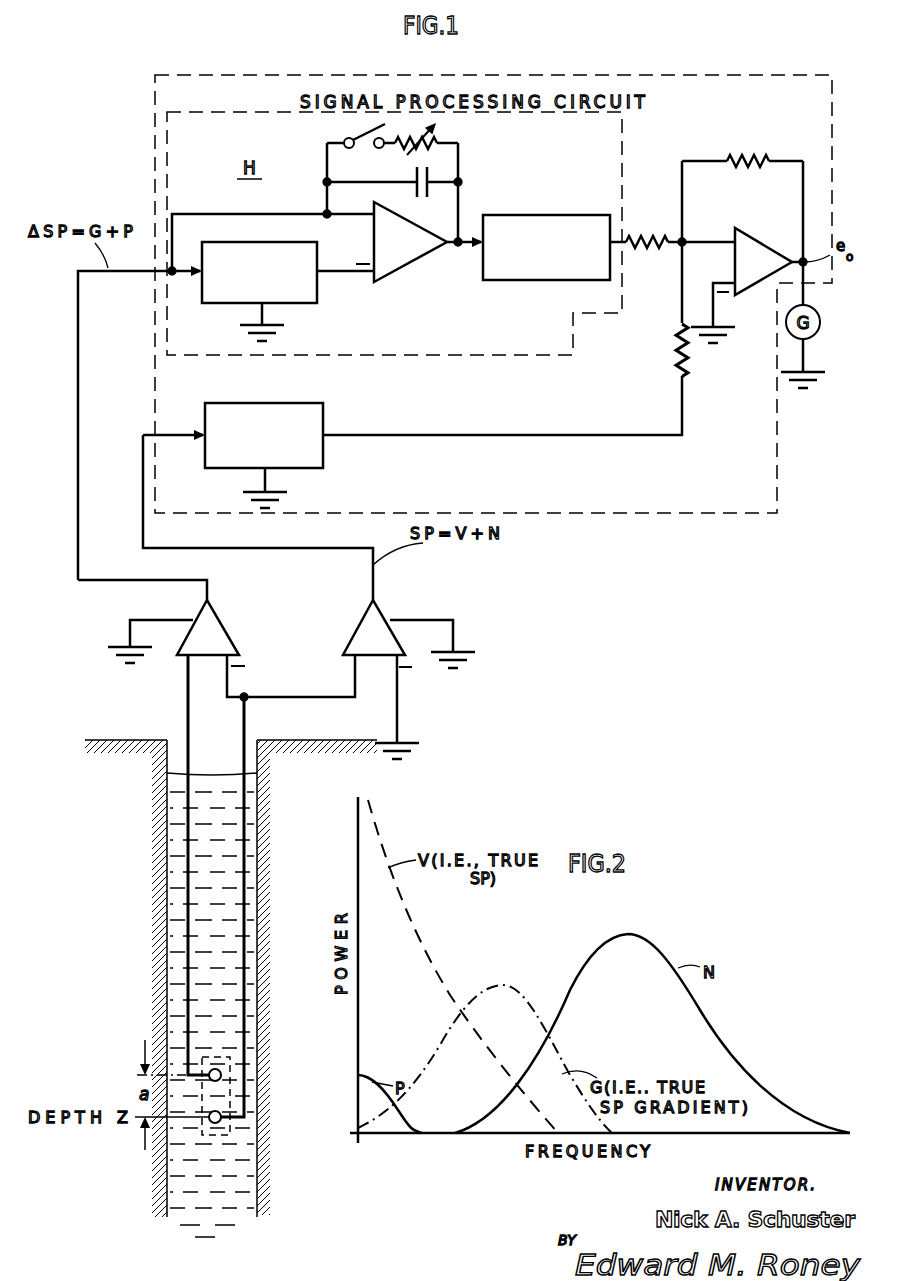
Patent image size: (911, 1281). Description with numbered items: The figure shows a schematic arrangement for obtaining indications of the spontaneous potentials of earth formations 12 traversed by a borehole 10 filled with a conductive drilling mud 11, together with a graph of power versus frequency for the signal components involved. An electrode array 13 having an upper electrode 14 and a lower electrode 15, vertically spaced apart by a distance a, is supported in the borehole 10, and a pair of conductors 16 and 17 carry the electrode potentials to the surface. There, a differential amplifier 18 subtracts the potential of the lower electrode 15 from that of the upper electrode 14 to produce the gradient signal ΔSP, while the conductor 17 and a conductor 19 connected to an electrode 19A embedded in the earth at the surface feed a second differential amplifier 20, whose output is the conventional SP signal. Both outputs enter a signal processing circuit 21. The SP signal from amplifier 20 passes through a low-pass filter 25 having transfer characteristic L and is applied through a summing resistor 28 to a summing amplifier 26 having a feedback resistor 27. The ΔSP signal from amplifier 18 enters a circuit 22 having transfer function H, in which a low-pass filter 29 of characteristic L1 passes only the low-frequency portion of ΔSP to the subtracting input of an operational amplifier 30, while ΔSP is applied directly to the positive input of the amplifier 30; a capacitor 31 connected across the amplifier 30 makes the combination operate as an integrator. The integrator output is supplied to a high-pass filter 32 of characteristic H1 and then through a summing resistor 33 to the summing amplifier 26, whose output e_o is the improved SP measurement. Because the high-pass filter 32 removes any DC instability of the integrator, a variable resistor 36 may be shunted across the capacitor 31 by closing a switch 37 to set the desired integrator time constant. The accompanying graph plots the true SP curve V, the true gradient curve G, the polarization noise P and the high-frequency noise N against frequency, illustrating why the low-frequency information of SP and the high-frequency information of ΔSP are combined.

The borehole 10 is at (252, 842).
The conductive drilling mud 11 is at (226, 817).
The earth formations 12 is at (138, 870).
The electrode array 13 is at (230, 1060).
The upper electrode 14 is at (212, 1068).
The lower electrode 15 is at (215, 1124).
The conductor 16 is at (190, 942).
The conductor 17 is at (242, 865).
The differential amplifier 18 is at (212, 627).
The conductor 19 is at (397, 694).
The surface electrode 19A is at (405, 758).
The differential amplifier 20 is at (365, 621).
The signal processing circuit 21 is at (157, 122).
The circuit having transfer function H 22 is at (623, 162).
The low-pass filter 25 is at (322, 405).
The summing amplifier 26 is at (750, 270).
The feedback resistor 27 is at (768, 153).
The summing resistor 28 is at (673, 345).
The low-pass filter 29 is at (317, 290).
The operational amplifier 30 is at (413, 250).
The capacitor 31 is at (415, 176).
The high-pass filter 32 is at (517, 215).
The summing resistor 33 is at (652, 237).
The variable resistor 36 is at (442, 130).
The switch 37 is at (347, 136).